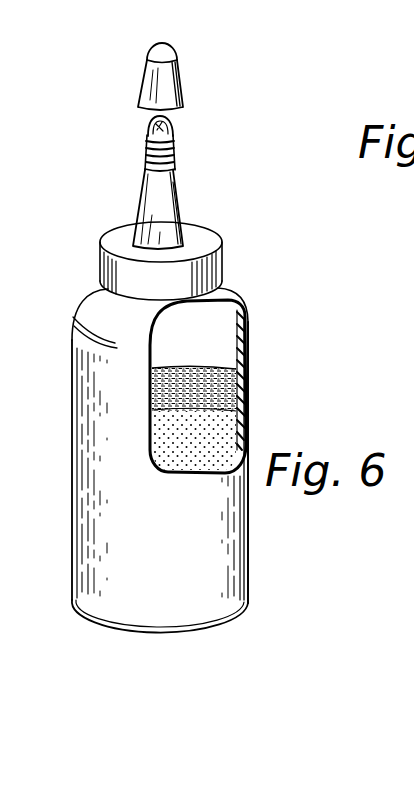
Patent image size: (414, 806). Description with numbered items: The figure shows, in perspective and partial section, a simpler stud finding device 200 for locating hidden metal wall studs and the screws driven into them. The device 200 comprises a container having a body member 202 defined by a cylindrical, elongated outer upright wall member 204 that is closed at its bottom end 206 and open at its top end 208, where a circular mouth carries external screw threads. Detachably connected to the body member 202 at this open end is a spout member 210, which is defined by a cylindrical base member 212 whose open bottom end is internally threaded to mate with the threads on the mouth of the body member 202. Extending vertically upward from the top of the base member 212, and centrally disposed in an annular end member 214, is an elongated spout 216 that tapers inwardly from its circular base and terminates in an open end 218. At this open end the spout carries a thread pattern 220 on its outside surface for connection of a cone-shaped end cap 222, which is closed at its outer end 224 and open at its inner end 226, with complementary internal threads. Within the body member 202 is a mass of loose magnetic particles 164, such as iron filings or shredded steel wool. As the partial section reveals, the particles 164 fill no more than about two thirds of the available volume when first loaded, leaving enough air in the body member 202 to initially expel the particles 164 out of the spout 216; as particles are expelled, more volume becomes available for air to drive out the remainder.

The magnetic particles 164 is at (193, 371).
The stud finding device 200 is at (251, 214).
The body member 202 is at (248, 524).
The outer upright wall member 204 is at (178, 556).
The bottom end 206 is at (224, 618).
The top end 208 is at (101, 290).
The spout member 210 is at (129, 198).
The base member 212 is at (101, 253).
The end member 214 is at (203, 229).
The spout 216 is at (186, 181).
The open end 218 is at (163, 120).
The thread pattern 220 is at (147, 150).
The end cap 222 is at (180, 59).
The outer end 224 is at (160, 47).
The inner end 226 is at (140, 108).